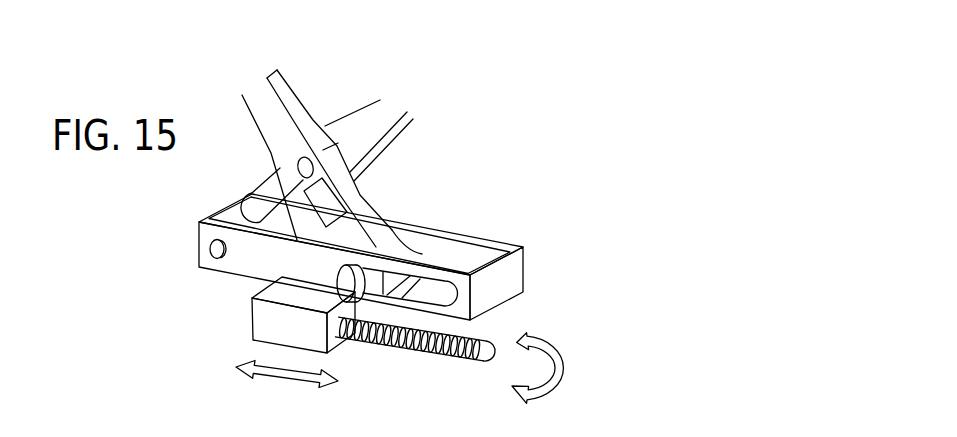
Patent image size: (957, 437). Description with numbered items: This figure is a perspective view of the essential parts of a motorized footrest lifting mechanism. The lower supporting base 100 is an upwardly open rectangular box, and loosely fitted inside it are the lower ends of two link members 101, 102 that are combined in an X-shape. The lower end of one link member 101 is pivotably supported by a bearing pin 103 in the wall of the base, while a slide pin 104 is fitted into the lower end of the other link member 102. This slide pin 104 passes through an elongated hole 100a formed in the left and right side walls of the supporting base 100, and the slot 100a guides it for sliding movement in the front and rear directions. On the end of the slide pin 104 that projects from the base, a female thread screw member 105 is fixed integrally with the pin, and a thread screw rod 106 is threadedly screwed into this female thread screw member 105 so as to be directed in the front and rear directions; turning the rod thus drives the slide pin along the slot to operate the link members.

The lower supporting base 100 is at (246, 268).
The elongated hole 100a is at (419, 291).
The link member 101 is at (400, 133).
The link member 102 is at (293, 90).
The bearing pin 103 is at (211, 253).
The slide pin 104 is at (337, 276).
The female thread screw member 105 is at (272, 323).
The thread screw rod 106 is at (433, 358).